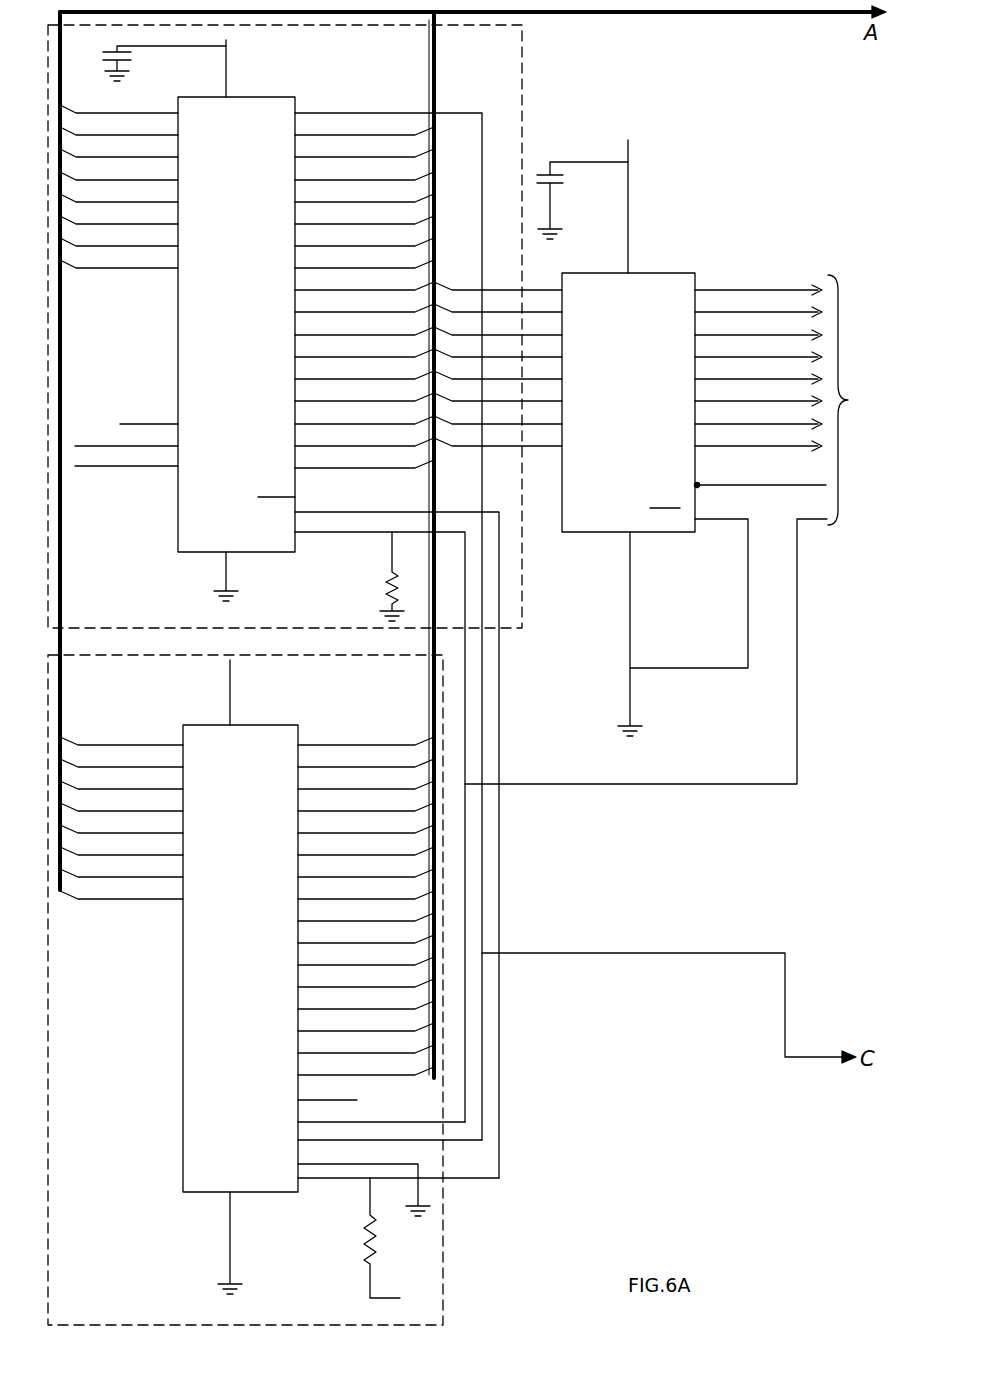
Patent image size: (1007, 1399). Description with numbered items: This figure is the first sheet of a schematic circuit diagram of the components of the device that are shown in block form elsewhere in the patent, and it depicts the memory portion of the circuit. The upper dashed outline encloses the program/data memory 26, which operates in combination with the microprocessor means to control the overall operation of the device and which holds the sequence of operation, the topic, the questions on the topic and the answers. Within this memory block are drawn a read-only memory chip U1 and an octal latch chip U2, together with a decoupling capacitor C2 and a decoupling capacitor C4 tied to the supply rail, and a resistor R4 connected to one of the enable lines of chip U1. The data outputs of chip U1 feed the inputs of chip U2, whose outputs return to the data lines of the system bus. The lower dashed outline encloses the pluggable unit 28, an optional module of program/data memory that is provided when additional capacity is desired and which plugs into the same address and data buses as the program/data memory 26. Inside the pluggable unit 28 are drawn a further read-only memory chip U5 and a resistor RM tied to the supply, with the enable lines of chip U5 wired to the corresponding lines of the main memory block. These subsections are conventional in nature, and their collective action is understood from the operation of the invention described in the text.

The program/data memory 26 is at (522, 112).
The pluggable unit 28 is at (103, 1324).
The 27C101 EPROM U1 is at (282, 319).
The 74HC374 octal latch U2 is at (624, 435).
The external cartridge EPROM U5 is at (264, 975).
The decoupling capacitor 0.01 C2 is at (151, 62).
The decoupling capacitor 0.01 C4 is at (582, 200).
The pull-down resistor 10k R4 is at (406, 576).
The pull-up resistor 4.7k RM is at (365, 1238).